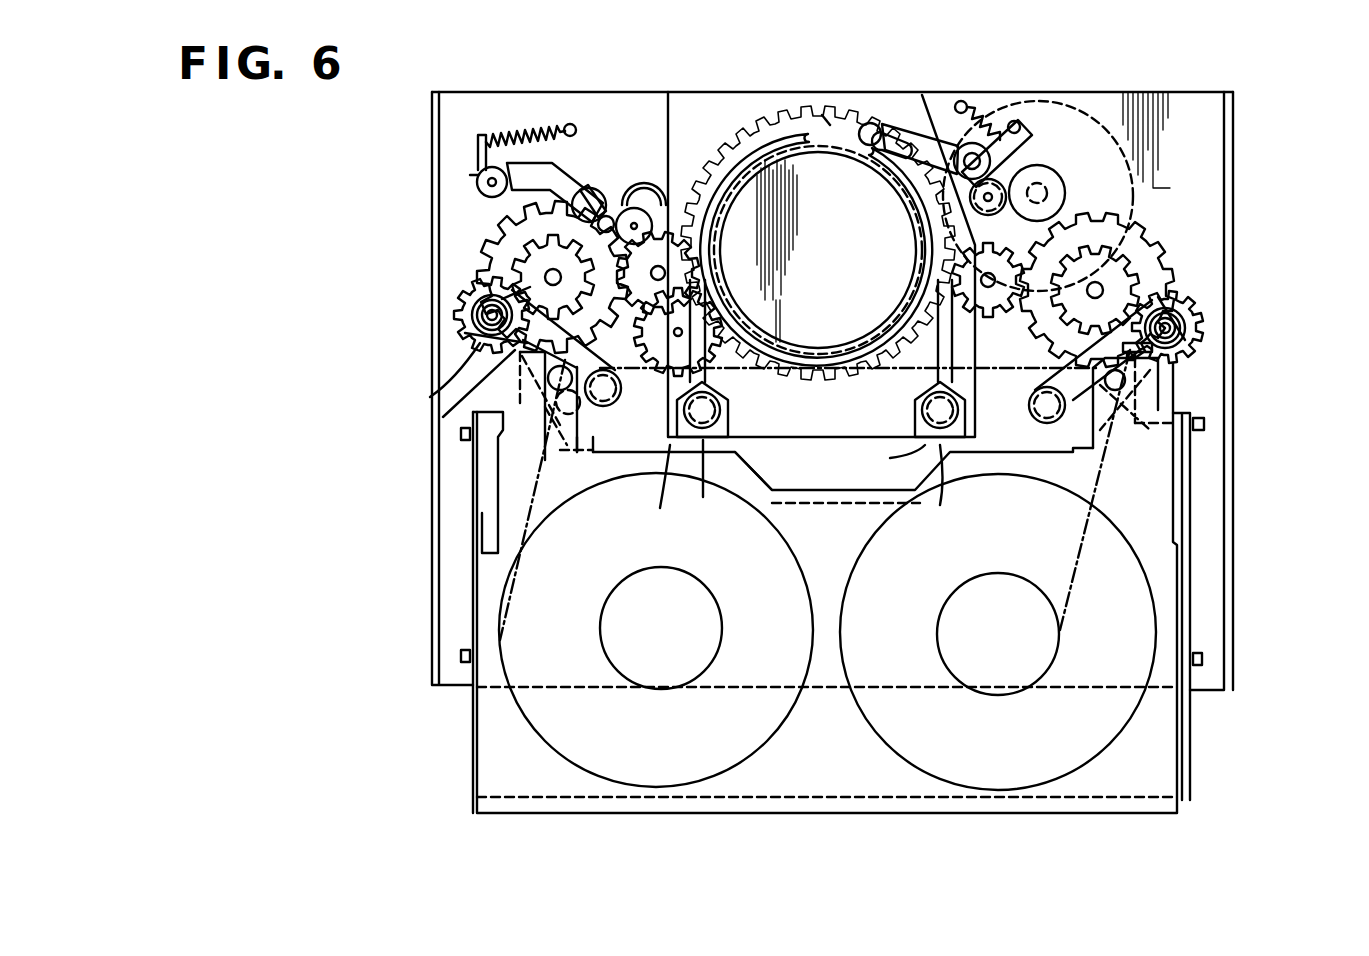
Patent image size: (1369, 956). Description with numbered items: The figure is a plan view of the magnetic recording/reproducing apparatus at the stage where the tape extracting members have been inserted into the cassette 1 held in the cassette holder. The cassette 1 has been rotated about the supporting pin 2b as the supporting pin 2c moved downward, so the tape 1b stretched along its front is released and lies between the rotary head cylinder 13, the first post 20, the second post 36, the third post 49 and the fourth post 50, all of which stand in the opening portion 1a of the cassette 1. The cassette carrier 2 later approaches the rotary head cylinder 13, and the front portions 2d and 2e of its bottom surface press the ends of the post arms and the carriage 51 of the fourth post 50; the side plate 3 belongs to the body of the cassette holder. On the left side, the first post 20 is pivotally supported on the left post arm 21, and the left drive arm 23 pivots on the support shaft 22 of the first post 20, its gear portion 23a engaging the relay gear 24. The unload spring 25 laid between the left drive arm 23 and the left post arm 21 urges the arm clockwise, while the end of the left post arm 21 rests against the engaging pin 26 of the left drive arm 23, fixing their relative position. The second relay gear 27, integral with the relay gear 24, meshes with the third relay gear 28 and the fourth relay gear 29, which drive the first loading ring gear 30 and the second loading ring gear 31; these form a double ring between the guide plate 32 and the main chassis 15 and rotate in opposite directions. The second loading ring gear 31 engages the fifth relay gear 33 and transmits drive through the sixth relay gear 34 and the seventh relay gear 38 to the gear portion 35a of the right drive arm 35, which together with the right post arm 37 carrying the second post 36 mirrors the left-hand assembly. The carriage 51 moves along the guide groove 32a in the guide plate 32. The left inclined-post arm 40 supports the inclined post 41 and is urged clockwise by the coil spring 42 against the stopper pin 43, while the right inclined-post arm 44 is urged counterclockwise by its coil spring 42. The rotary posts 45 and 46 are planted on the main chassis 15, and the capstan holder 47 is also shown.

The cassette 1 is at (1105, 800).
The opening portion 1a is at (815, 492).
The tape 1b is at (821, 409).
The cassette carrier 2 is at (1190, 530).
The supporting pin 2b is at (466, 662).
The supporting pin 2c is at (463, 440).
The front portion of bottom surface 2d is at (993, 452).
The front portion of bottom surface 2e is at (627, 445).
The side plate 3 is at (432, 637).
The rotary head cylinder 13 is at (818, 250).
The main chassis 15 is at (522, 100).
The first post 20 is at (593, 455).
The left post arm 21 is at (480, 355).
The support shaft 22 is at (470, 338).
The left drive arm 23 is at (505, 368).
The gear portion 23a is at (455, 318).
The relay gear 24 is at (480, 255).
The unload spring 25 is at (470, 300).
The engaging pin 26 is at (567, 440).
The second relay gear 27 is at (518, 222).
The third relay gear 28 is at (660, 328).
The fourth relay gear 29 is at (662, 370).
The first loading ring gear 30 is at (822, 115).
The second loading ring gear 31 is at (826, 120).
The guide plate 32 is at (740, 92).
The guide groove 32a is at (715, 152).
The fifth relay gear 33 is at (1000, 320).
The sixth relay gear 34 is at (1140, 237).
The right drive arm 35 is at (1180, 480).
The gear portion 35a is at (1200, 318).
The second post 36 is at (1045, 425).
The right post arm 37 is at (1150, 392).
The seventh relay gear 38 is at (1140, 272).
The left inclined-post arm 40 is at (470, 175).
The inclined post 41 is at (595, 198).
The coil spring 42 is at (540, 130).
The stopper pin 43 is at (522, 193).
The right inclined-post arm 44 is at (922, 95).
The rotary post 45 is at (640, 192).
The rotary post 46 is at (1025, 182).
The capstan holder 47 is at (1062, 192).
The third post 49 is at (887, 458).
The fourth post 50 is at (705, 485).
The carriage 51 is at (800, 492).